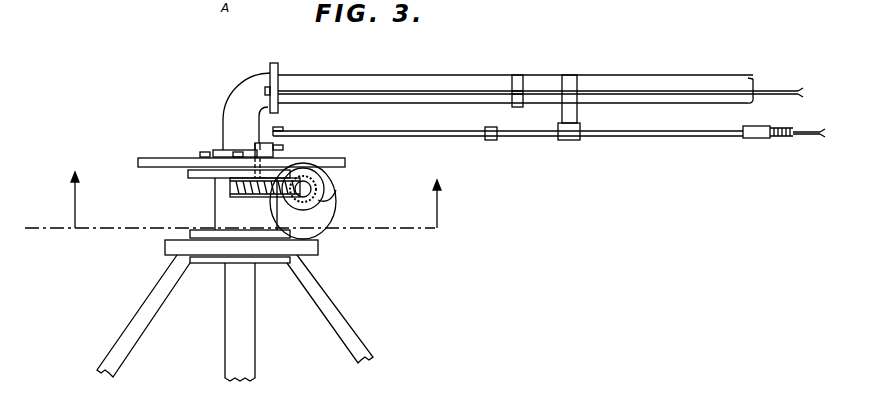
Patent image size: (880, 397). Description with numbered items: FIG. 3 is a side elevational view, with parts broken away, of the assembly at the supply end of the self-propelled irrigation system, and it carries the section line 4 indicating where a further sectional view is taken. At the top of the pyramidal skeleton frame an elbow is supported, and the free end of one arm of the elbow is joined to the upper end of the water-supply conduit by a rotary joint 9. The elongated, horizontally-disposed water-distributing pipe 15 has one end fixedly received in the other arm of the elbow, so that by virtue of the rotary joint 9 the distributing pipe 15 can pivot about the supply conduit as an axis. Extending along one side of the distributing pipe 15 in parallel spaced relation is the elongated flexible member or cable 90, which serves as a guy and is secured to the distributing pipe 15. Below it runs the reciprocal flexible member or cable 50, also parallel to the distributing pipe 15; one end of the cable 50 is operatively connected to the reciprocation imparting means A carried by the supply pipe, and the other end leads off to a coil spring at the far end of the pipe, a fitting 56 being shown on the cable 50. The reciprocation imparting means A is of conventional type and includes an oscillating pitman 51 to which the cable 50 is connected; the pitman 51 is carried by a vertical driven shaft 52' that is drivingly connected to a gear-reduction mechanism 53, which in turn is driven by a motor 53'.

The rotary joint 9 is at (225, 205).
The water-distributing pipe 15 is at (722, 80).
The reciprocal flexible member or cable 50 is at (665, 136).
The oscillating pitman 51 is at (258, 146).
The vertical driven shaft 52' is at (292, 169).
The gear-reduction mechanism 53 is at (330, 201).
The motor 53' is at (344, 240).
The fitting 56 is at (805, 138).
The elongated flexible member or cable 90 is at (667, 90).
The reciprocation imparting means A is at (349, 182).
The section line 4- 4 is at (243, 200).